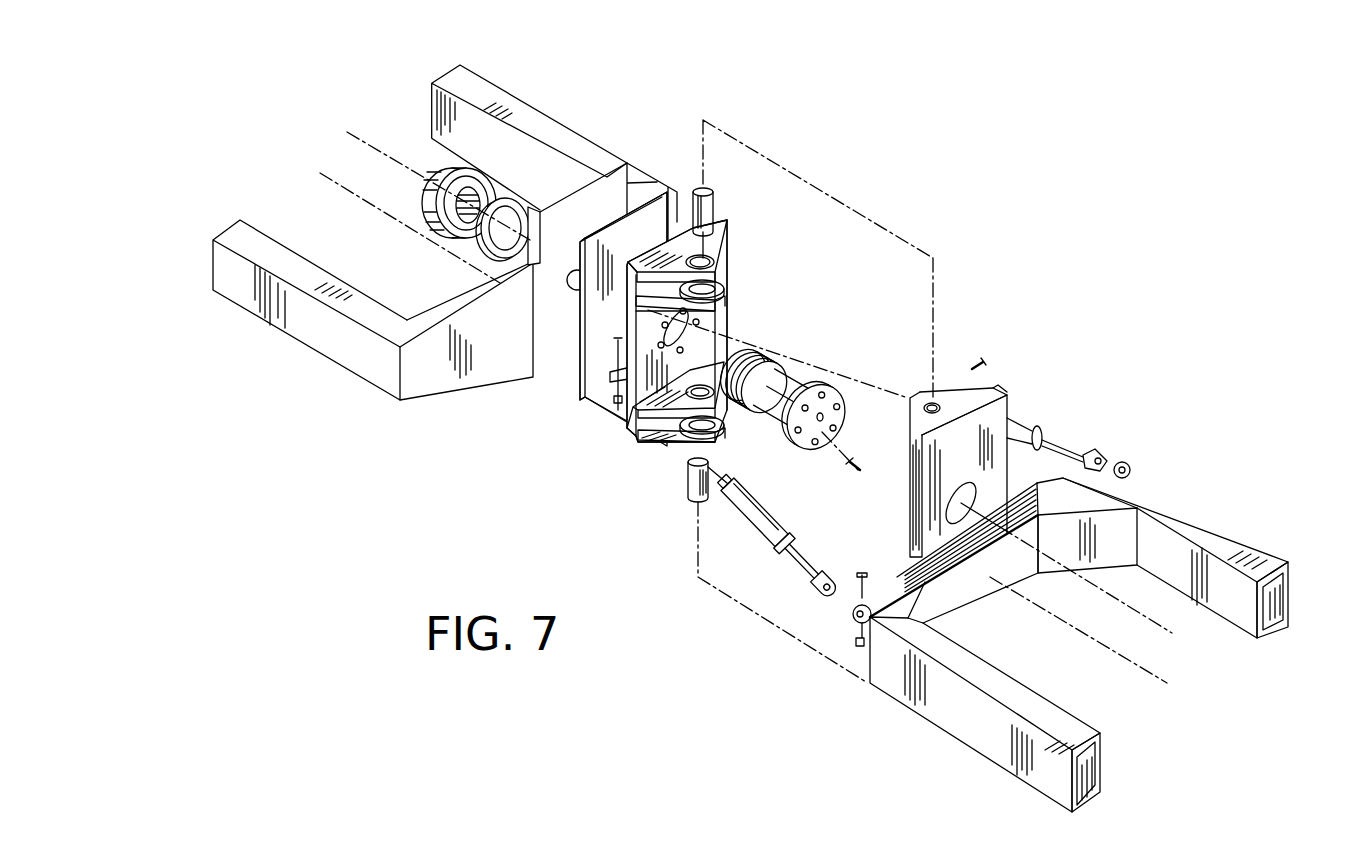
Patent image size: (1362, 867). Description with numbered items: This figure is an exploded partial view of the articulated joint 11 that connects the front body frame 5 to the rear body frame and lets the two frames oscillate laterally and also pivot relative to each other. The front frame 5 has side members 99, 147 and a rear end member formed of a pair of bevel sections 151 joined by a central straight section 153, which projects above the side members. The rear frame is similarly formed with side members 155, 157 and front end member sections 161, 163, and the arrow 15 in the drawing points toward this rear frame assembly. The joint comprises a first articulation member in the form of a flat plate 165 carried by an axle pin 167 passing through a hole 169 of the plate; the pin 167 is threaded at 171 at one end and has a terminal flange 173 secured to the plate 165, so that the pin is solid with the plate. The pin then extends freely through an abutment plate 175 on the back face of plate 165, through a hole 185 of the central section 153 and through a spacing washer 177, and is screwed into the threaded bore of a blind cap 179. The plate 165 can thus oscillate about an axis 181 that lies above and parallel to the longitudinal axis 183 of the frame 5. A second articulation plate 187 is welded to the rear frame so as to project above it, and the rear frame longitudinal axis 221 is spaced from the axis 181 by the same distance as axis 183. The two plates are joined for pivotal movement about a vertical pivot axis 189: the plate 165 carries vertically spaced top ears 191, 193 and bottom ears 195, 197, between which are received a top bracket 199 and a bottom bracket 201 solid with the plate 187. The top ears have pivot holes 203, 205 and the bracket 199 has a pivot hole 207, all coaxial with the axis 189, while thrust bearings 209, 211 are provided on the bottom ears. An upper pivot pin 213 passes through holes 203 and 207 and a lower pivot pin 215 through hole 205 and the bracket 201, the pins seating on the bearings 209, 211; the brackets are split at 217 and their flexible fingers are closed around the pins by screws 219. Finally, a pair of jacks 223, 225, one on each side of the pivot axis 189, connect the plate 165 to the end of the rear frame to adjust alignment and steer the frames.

The front body frame 5 is at (552, 88).
The articulated joint 11 is at (960, 275).
The support frame 15 is at (1262, 522).
The side member 99 is at (297, 257).
The side member 147 is at (573, 140).
The bevel sections 151 is at (672, 196).
The central straight section 153 is at (538, 372).
The side member 155 is at (1077, 727).
The side member 157 is at (1268, 557).
The front end member section 161 is at (1110, 558).
The front end member section 163 is at (980, 595).
The flat plate 165 is at (605, 380).
The axle pin 167 is at (825, 365).
The hole 169 is at (730, 325).
The threaded end 171 is at (803, 366).
The terminal flange 173 is at (828, 417).
The abutment plate 175 is at (585, 398).
The spacing washer 177 is at (513, 207).
The blind cap 179 is at (440, 180).
The oscillation axis 181 is at (358, 123).
The longitudinal axis 183 is at (326, 182).
The hole 185 is at (575, 275).
The flat plate 187 is at (998, 408).
The pivot axis 189 is at (705, 156).
The top ear 191 is at (722, 236).
The top ear 193 is at (727, 300).
The bottom ear 195 is at (642, 432).
The bottom ear 197 is at (668, 440).
The top bracket 199 is at (1008, 395).
The bottom bracket 201 is at (910, 537).
The pivot hole 203 is at (713, 262).
The pivot hole 205 is at (718, 430).
The pivot hole 207 is at (940, 392).
The thrust bearing 209 is at (720, 287).
The thrust bearing 211 is at (677, 443).
The upper pivot pin 213 is at (714, 213).
The lower pivot pin 215 is at (690, 494).
The split 217 is at (930, 400).
The screws 219 is at (978, 356).
The longitudinal axis 221 is at (1148, 672).
The jack 223 is at (763, 510).
The jack 225 is at (1020, 428).